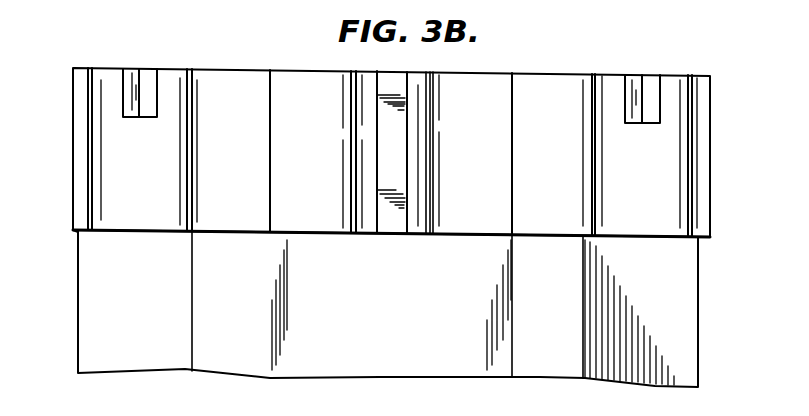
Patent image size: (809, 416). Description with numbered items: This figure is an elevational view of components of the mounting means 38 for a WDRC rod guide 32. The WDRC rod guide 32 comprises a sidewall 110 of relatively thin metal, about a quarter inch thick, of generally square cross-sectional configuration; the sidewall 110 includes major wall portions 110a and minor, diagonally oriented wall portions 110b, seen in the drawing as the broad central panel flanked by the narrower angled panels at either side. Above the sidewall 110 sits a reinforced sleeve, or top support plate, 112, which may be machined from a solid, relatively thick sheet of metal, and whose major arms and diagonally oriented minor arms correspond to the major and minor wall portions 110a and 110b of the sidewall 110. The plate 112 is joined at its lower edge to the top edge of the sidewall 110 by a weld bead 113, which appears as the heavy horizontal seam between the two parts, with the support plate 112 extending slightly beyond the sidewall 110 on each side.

The WDRC rod guide 32 is at (712, 303).
The mounting means 38 is at (60, 90).
The sidewall 110 is at (411, 323).
The major wall portions 110a is at (382, 357).
The minor wall portions 110b is at (126, 357).
The top support plate 112 is at (720, 203).
The weld bead 113 is at (76, 235).